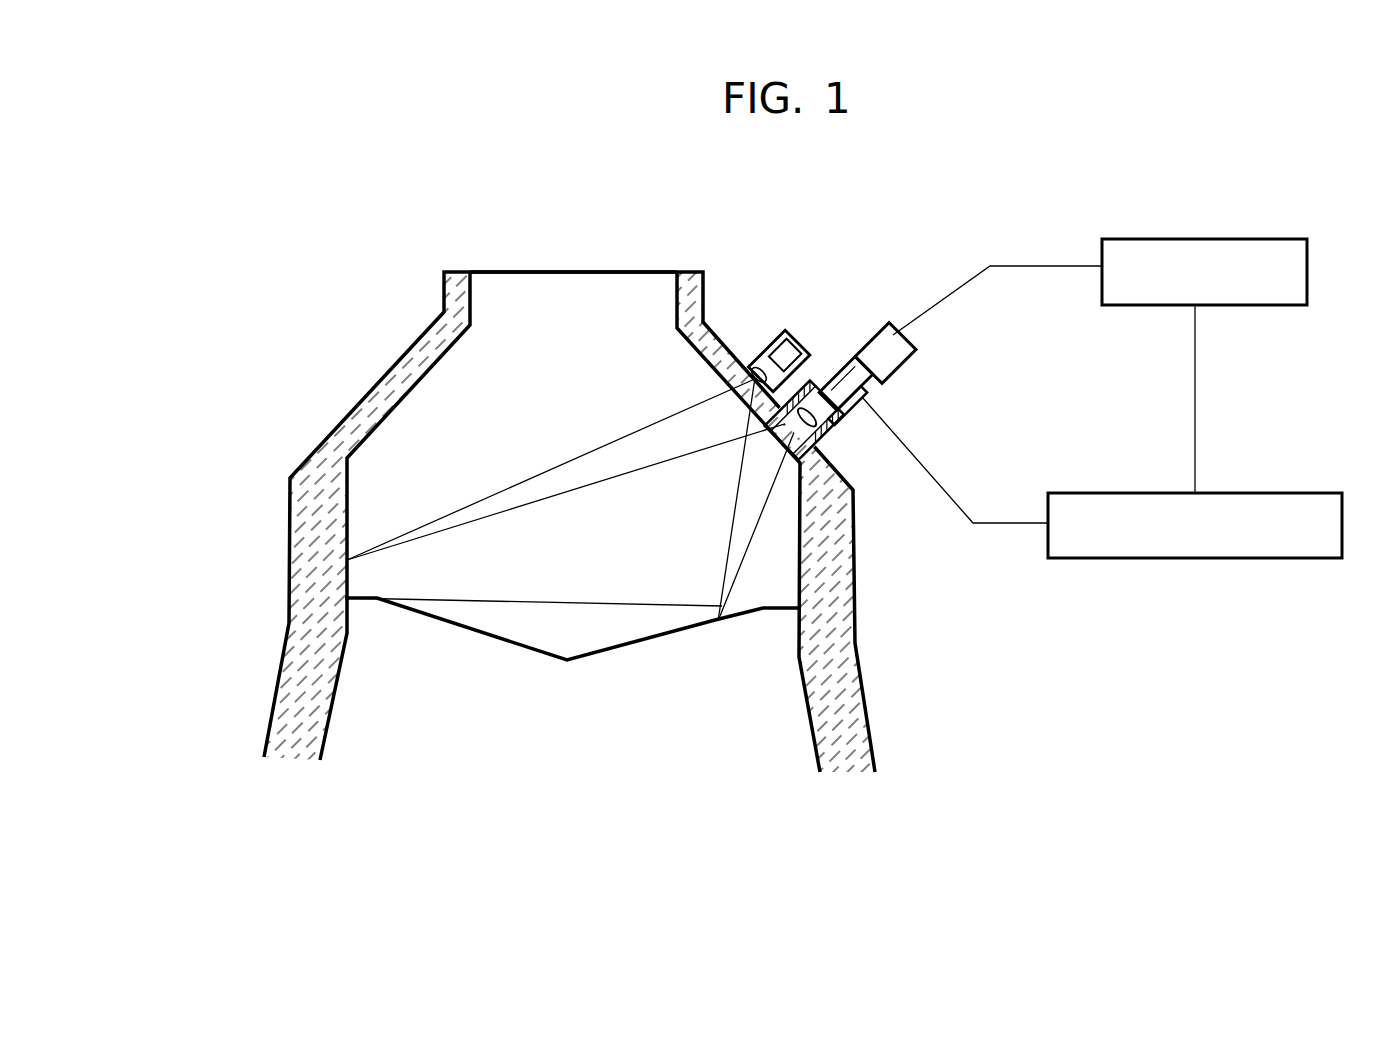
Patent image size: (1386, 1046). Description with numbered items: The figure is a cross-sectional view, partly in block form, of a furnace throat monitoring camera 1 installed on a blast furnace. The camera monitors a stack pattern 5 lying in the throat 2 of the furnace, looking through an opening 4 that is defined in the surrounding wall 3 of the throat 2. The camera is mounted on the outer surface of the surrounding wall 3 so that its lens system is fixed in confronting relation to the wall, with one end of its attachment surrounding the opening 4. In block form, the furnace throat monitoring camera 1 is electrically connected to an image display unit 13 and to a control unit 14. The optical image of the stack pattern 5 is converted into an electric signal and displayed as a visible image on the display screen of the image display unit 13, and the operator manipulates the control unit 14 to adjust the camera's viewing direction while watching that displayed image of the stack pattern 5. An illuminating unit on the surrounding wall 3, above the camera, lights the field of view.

The furnace throat monitoring camera 1 is at (918, 384).
The throat 2 is at (613, 300).
The surrounding wall 3 is at (855, 590).
The opening 4 is at (768, 456).
The stack pattern 5 is at (490, 632).
The image display unit 13 is at (1228, 558).
The control unit 14 is at (1238, 239).